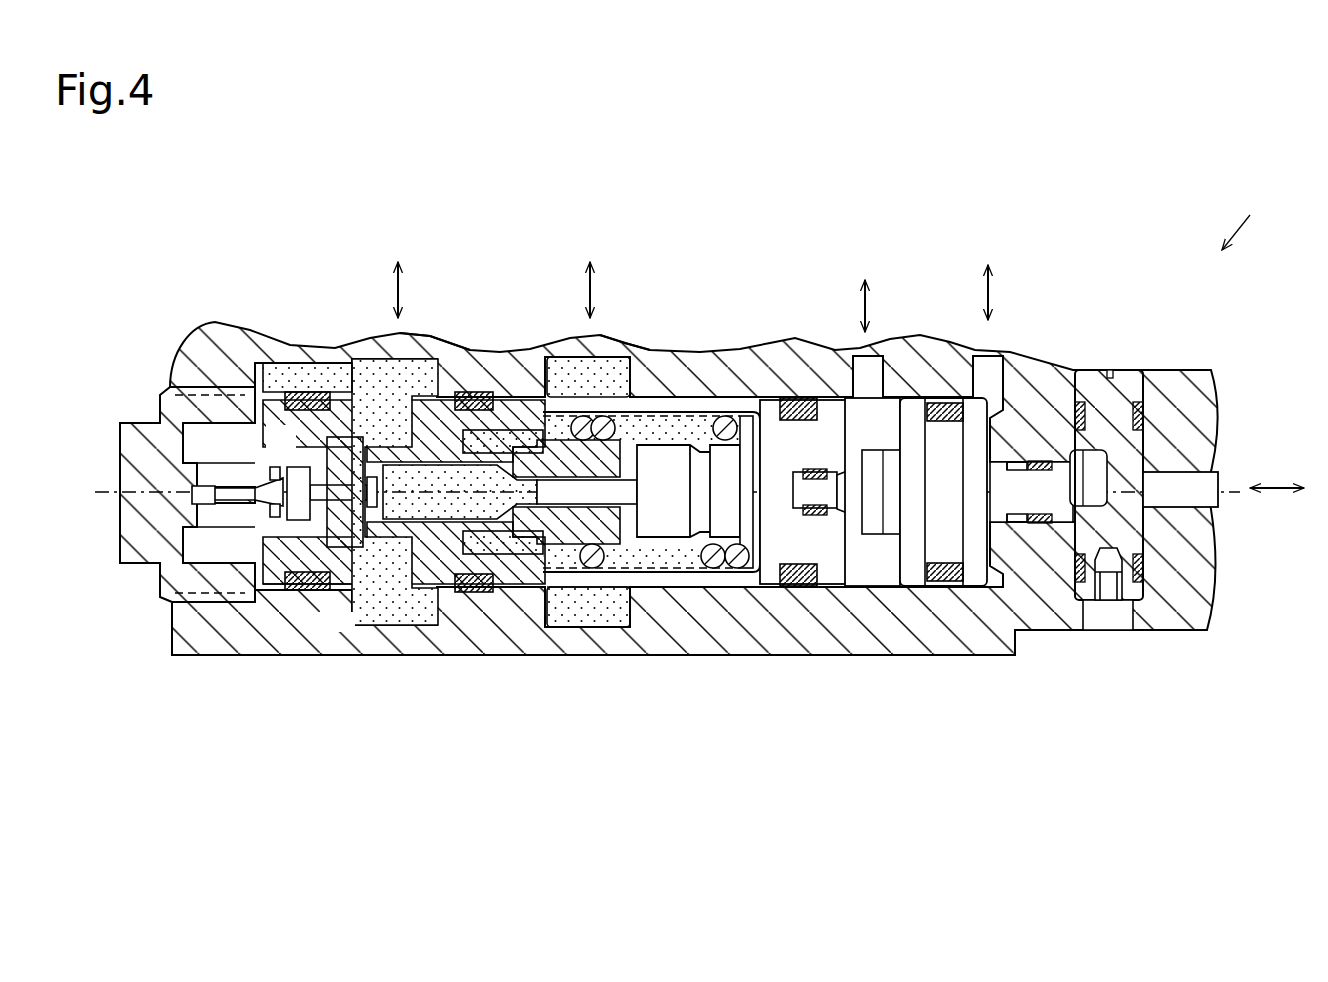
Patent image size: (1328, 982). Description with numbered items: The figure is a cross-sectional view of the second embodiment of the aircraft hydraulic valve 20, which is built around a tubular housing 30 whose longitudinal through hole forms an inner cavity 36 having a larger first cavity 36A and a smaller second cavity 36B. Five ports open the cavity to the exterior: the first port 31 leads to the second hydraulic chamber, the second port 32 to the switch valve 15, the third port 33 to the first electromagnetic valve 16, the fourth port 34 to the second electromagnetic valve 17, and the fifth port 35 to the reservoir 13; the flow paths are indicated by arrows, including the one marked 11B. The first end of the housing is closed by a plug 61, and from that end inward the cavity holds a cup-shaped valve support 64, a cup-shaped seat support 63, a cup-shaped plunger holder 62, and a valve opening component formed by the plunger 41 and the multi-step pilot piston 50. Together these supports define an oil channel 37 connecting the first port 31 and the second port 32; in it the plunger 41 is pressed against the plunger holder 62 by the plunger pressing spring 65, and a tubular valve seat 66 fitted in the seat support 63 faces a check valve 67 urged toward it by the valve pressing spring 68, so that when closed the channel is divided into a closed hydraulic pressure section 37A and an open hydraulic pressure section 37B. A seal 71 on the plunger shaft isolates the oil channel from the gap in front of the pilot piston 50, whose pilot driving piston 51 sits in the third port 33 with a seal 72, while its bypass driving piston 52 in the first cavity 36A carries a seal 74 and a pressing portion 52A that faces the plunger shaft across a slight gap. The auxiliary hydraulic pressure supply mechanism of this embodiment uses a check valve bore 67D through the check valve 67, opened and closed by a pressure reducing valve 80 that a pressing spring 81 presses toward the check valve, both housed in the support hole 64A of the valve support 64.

The hydraulic valve 20 is at (1247, 220).
The housing 30 is at (212, 658).
The first port 31 is at (437, 352).
The second port 32 is at (618, 347).
The third port 33 is at (1218, 488).
The fourth port 34 is at (995, 354).
The fifth port 35 is at (872, 352).
The inner cavity 36 is at (578, 612).
The first cavity 36A is at (632, 600).
The second cavity 36B is at (1022, 463).
The oil channel 37 is at (345, 398).
The closed hydraulic pressure section 37A is at (265, 400).
The open hydraulic pressure section 37B is at (470, 392).
The plunger 41 is at (840, 510).
The pilot piston 50 is at (1000, 586).
The pilot driving piston 51 is at (1092, 452).
The bypass driving piston 52 is at (985, 588).
The pressing portion 52A is at (878, 590).
The plug 61 is at (138, 422).
The plunger holder 62 is at (760, 400).
The seat support 63 is at (497, 443).
The valve support 64 is at (262, 385).
The support hole 64A is at (268, 548).
The plunger pressing spring 65 is at (728, 420).
The valve seat 66 is at (546, 592).
The check valve 67 is at (362, 586).
The check valve bore 67D is at (343, 590).
The valve pressing spring 68 is at (322, 442).
The seal 71 is at (800, 470).
The seal 72 is at (1046, 455).
The seal 74 is at (942, 588).
The pressure reducing valve 80 is at (296, 520).
The pressing spring 81 is at (242, 447).
The flow path 11B is at (397, 276).
The reservoir 13 is at (866, 292).
The switch valve 15 is at (590, 276).
The first electromagnetic valve 16 is at (1277, 473).
The second electromagnetic valve 17 is at (988, 279).